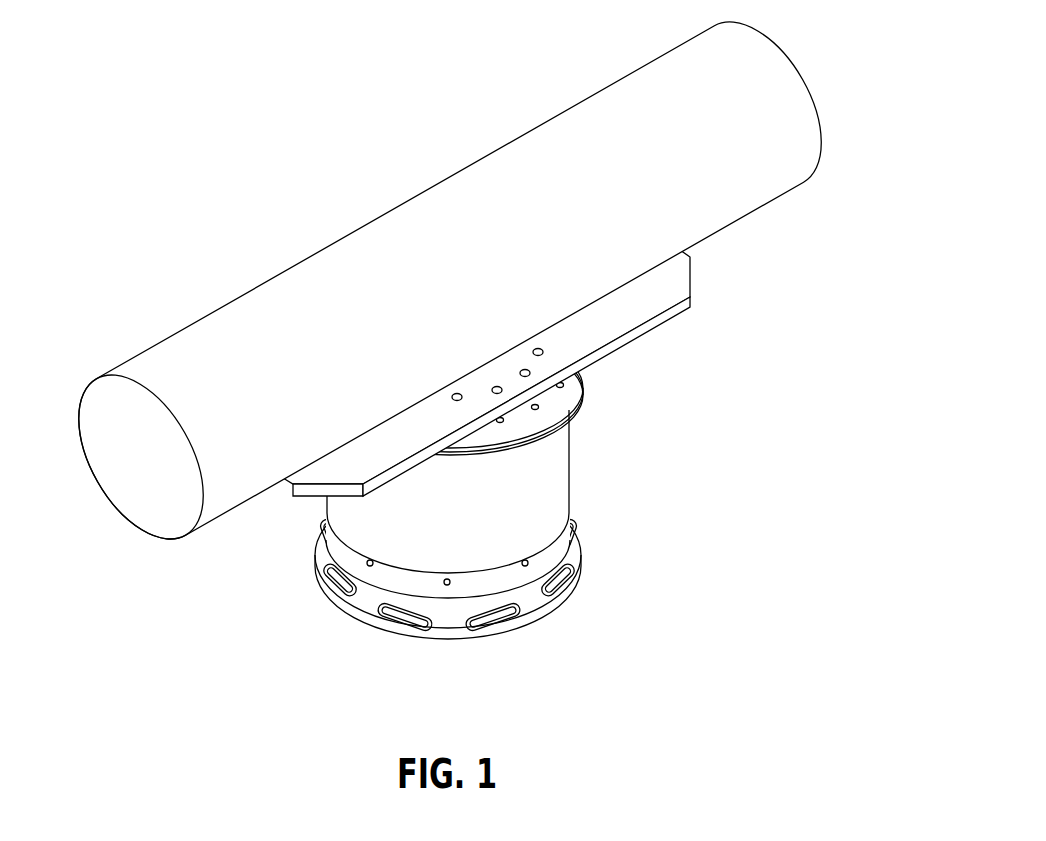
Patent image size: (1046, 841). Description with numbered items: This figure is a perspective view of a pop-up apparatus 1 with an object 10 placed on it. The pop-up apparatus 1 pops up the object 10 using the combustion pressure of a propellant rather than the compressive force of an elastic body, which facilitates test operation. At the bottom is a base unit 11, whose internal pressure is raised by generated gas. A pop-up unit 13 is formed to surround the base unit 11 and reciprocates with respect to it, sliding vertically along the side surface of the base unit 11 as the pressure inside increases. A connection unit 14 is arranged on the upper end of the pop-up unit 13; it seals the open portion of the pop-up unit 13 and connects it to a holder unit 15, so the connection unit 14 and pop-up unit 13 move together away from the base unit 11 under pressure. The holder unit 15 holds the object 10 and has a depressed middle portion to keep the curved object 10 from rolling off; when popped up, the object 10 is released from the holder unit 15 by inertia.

The pop-up apparatus 1 is at (437, 360).
The object 10 is at (178, 355).
The base unit 11 is at (547, 550).
The pop-up unit 13 is at (557, 468).
The connection unit 14 is at (568, 410).
The holder unit 15 is at (312, 496).